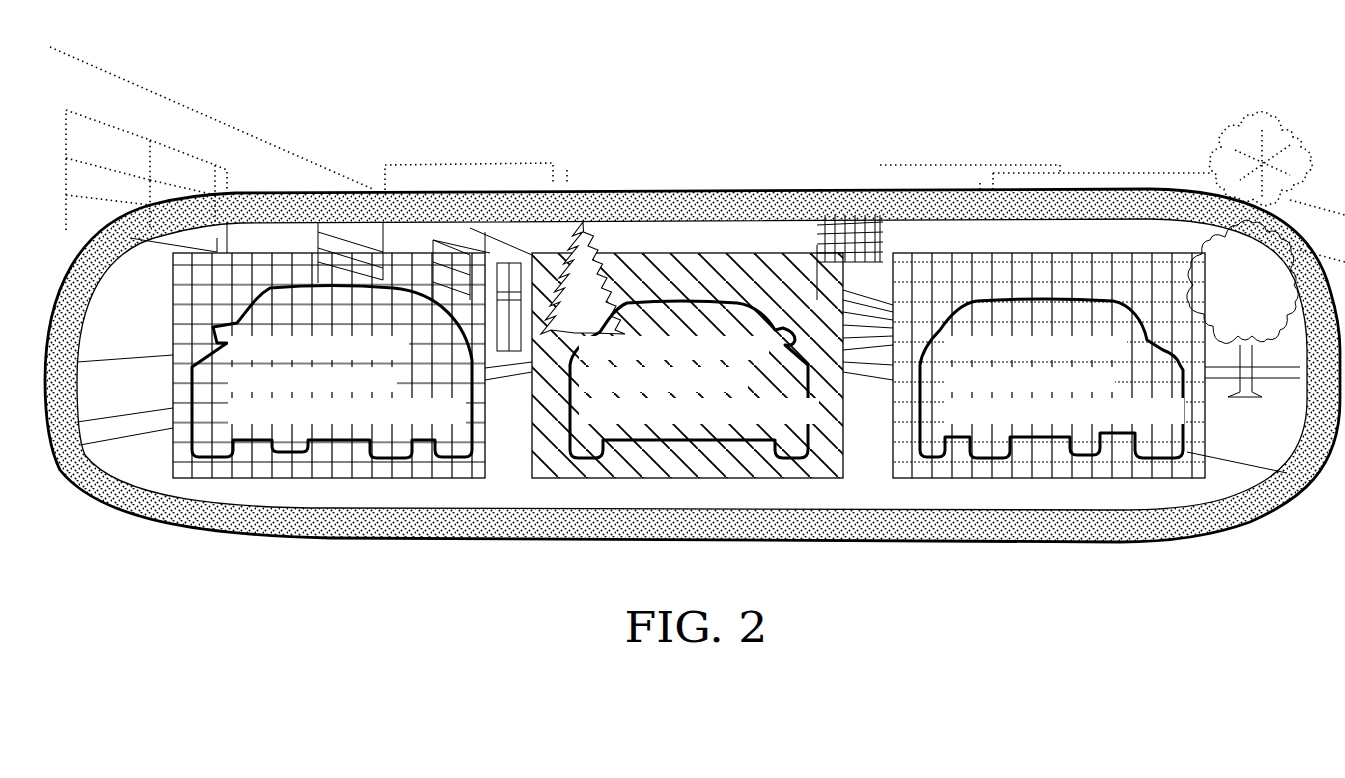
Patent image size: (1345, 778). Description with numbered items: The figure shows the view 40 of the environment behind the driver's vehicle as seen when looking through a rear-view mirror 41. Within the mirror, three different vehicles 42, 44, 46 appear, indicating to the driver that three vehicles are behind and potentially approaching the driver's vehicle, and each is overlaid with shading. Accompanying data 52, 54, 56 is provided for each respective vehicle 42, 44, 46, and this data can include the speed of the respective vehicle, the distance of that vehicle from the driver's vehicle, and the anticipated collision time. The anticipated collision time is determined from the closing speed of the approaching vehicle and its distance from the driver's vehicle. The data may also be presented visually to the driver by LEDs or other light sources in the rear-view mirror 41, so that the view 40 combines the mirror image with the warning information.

The view 40 is at (1218, 470).
The rear-view mirror 41 is at (1112, 539).
The vehicle 42 is at (340, 288).
The vehicle 44 is at (698, 300).
The vehicle 46 is at (1053, 300).
The accompanying data 52 is at (282, 417).
The accompanying data 54 is at (637, 418).
The accompanying data 56 is at (1003, 420).